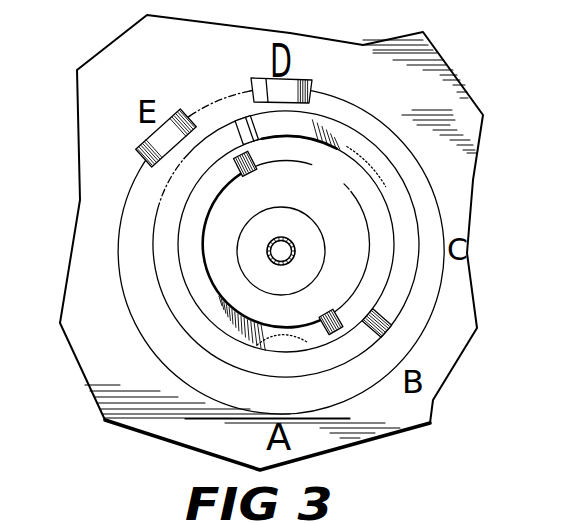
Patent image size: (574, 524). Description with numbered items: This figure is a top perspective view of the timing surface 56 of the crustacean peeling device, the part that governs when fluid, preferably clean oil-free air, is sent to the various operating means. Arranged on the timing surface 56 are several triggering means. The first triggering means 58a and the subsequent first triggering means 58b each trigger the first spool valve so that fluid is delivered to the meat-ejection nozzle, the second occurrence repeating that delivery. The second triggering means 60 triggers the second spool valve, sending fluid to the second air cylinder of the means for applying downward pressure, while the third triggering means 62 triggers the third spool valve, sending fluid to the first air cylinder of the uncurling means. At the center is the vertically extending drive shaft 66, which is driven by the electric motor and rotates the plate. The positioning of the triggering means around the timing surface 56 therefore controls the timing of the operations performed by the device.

The timing surface 56 is at (450, 177).
The first triggering means 58a is at (270, 84).
The subsequent first triggering means 58b is at (178, 118).
The second triggering means 60 is at (407, 224).
The third triggering means 62 is at (223, 306).
The drive shaft 66 is at (281, 238).